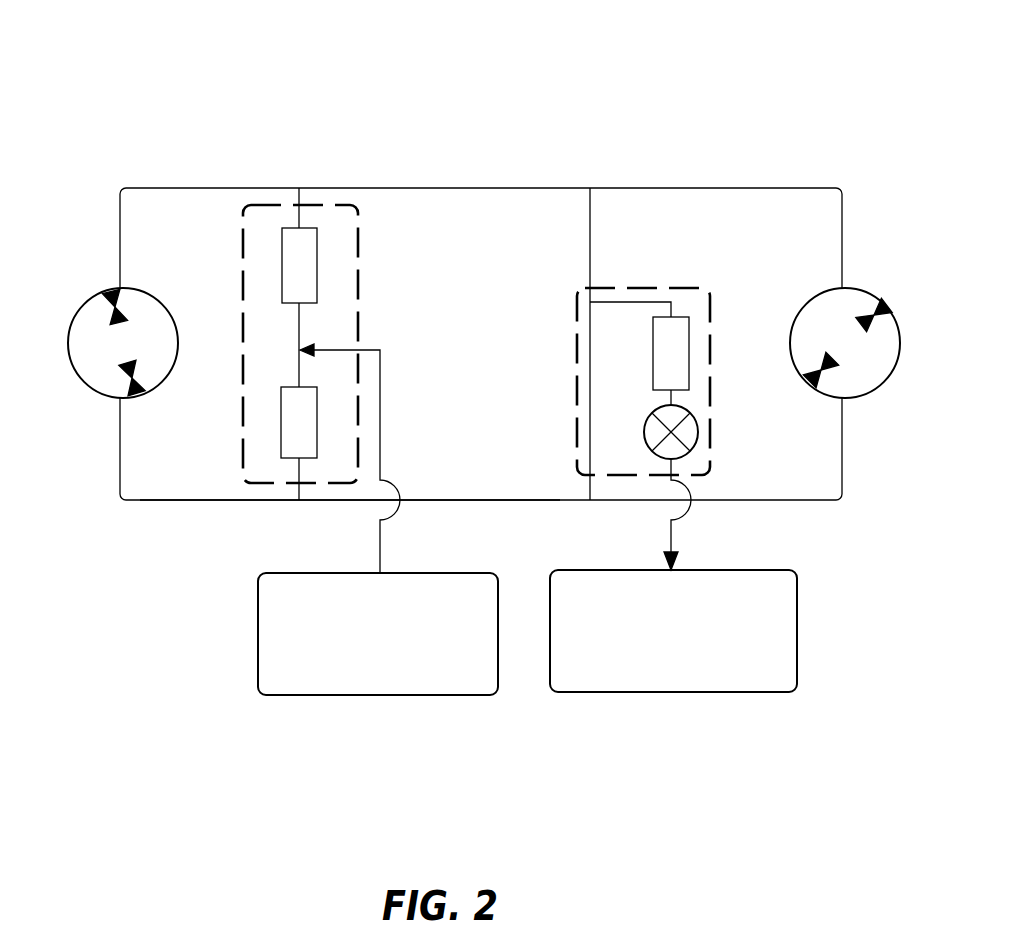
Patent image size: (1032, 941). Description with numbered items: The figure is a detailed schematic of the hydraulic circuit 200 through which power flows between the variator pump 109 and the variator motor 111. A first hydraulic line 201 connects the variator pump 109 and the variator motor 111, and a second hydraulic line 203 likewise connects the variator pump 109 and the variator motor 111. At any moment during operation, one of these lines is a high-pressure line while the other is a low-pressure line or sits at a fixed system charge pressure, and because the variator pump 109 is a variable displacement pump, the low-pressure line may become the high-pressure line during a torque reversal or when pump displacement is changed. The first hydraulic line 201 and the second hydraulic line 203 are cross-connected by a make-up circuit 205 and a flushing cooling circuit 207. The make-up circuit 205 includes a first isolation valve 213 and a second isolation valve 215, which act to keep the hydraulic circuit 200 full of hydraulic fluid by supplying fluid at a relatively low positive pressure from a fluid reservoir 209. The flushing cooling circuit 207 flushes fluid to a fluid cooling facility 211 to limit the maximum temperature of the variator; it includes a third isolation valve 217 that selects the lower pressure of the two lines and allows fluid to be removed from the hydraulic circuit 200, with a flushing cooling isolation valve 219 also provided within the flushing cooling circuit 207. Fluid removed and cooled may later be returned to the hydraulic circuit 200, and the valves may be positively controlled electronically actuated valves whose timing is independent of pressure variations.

The hydraulic circuit 200 is at (541, 71).
The first hydraulic line 201 is at (187, 190).
The second hydraulic line 203 is at (202, 503).
The make-up circuit 205 is at (362, 258).
The flushing cooling circuit 207 is at (643, 283).
The fluid reservoir 209 is at (352, 686).
The fluid cooling facility 211 is at (647, 683).
The first isolation valve 213 is at (313, 240).
The second isolation valve 215 is at (305, 423).
The third isolation valve 217 is at (683, 333).
The flushing cooling isolation valve 219 is at (698, 435).
The variator pump 109 is at (88, 388).
The variator motor 111 is at (858, 290).